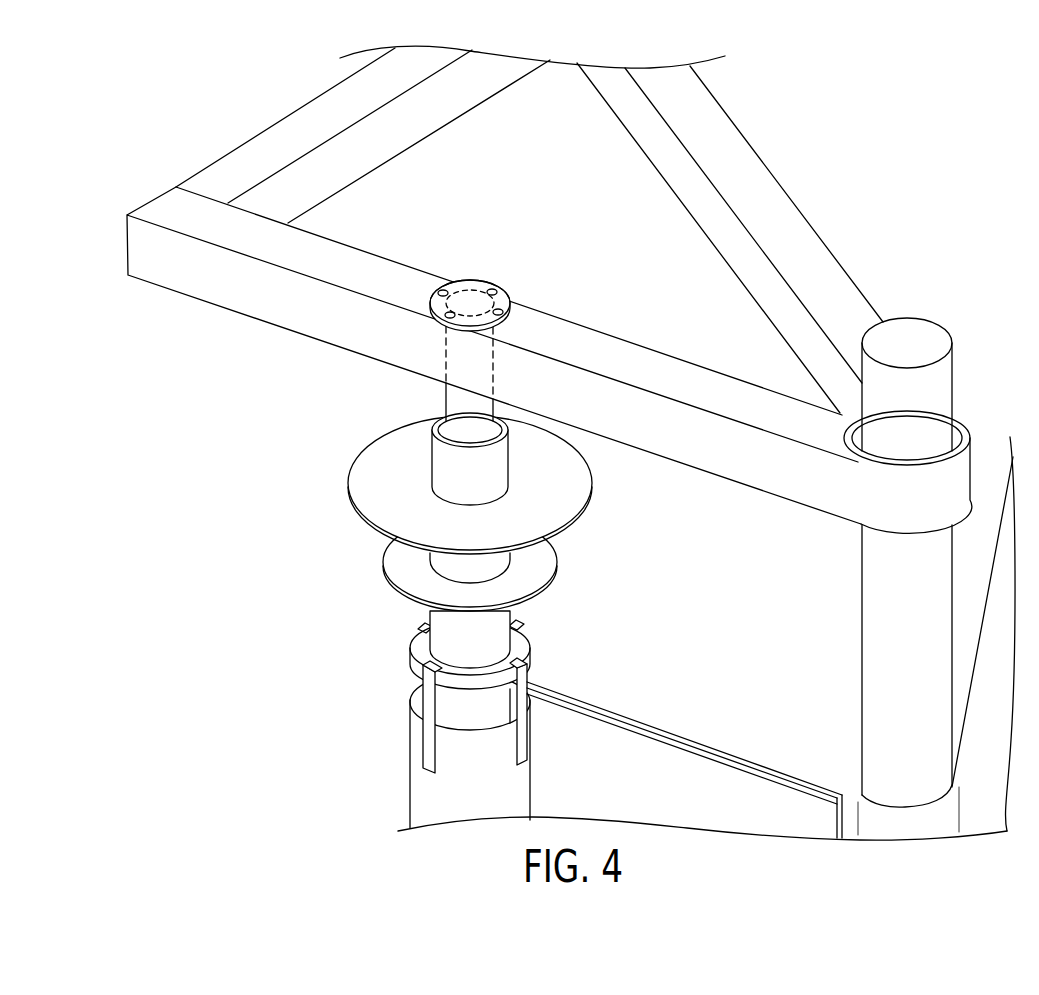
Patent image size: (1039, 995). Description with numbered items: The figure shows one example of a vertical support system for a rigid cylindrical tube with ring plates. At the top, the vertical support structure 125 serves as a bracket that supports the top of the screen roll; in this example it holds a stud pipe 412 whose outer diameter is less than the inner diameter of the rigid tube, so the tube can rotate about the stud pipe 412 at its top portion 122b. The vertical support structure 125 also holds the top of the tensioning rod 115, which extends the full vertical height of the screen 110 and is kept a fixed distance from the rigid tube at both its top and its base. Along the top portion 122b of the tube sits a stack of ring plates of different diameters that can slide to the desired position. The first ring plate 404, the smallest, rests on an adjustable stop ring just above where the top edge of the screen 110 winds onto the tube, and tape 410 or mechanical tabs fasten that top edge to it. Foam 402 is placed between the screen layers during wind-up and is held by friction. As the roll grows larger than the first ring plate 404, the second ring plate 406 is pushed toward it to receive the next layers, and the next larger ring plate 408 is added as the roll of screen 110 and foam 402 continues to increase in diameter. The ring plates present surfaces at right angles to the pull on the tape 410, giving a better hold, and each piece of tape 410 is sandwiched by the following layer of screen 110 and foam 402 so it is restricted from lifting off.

The vertical support structure 125 is at (215, 290).
The tensioning rod 115 is at (877, 658).
The foam 402 is at (683, 808).
The first ring plate 404 is at (418, 650).
The tape 410 is at (430, 750).
The screen 110 is at (675, 732).
The second ring plate 406 is at (390, 565).
The ring plate 408 is at (357, 483).
The top portion of the rigid cylindrical tube 122b is at (438, 460).
The stud pipe 412 is at (455, 402).